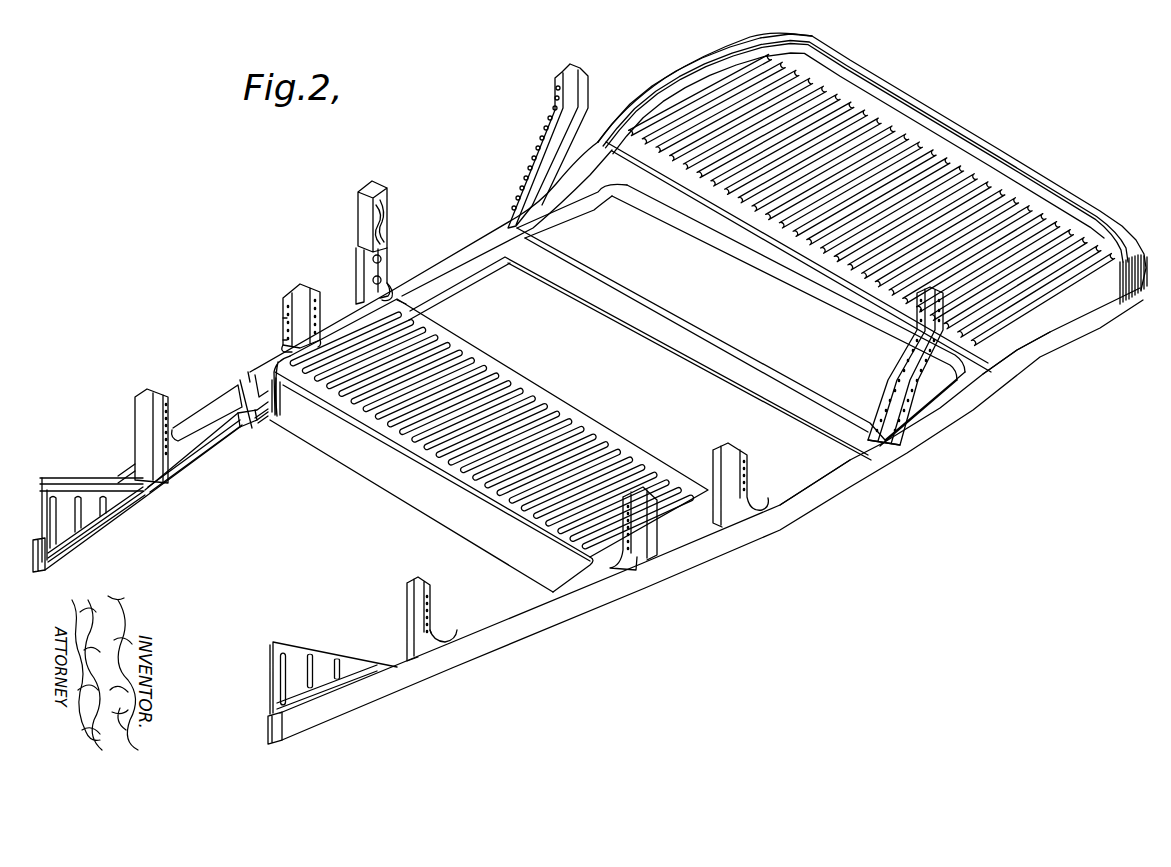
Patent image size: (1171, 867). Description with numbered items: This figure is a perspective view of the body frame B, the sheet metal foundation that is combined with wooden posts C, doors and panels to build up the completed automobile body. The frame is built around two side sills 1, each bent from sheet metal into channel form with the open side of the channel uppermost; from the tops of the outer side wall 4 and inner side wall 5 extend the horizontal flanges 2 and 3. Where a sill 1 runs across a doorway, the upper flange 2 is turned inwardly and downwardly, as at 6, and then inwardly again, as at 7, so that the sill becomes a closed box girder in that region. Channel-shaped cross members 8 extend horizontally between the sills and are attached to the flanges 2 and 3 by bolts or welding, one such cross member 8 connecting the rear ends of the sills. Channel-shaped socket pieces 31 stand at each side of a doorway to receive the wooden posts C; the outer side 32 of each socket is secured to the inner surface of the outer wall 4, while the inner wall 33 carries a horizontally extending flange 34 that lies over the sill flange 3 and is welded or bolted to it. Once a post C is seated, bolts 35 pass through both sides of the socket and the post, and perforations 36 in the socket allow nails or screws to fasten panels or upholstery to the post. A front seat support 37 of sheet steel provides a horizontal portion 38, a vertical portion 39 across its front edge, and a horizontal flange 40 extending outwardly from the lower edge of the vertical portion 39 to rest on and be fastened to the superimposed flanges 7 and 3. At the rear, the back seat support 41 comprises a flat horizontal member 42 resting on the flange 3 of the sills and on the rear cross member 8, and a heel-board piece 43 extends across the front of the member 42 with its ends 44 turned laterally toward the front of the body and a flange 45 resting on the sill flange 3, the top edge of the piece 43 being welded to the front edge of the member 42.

The side sill 1 is at (44, 566).
The upper flange 2 is at (658, 102).
The flange 3 is at (145, 490).
The outer side wall 4 is at (700, 72).
The side wall 5 is at (68, 549).
The inwardly and downwardly extended flange portion 6 is at (246, 384).
The inward flange portion 7 is at (488, 265).
The cross member 8 is at (953, 160).
The socket piece 31 is at (548, 128).
The outer side of socket 32 is at (895, 405).
The inner wall of socket 33 is at (892, 378).
The horizontally extending flange 34 is at (182, 463).
The bolt 35 is at (388, 273).
The perforations 36 is at (283, 341).
The front seat support 37 is at (367, 447).
The horizontal portion 38 is at (513, 380).
The vertical portion 39 is at (425, 478).
The horizontal flange 40 is at (440, 524).
The back seat support 41 is at (872, 108).
The flat horizontal member 42 is at (1005, 166).
The heel-board sheet metal piece 43 is at (718, 232).
The ends of heel-board piece 44 is at (570, 200).
The flange of heel-board 45 is at (746, 290).
The body frame B is at (827, 491).
The wooden post C is at (387, 186).